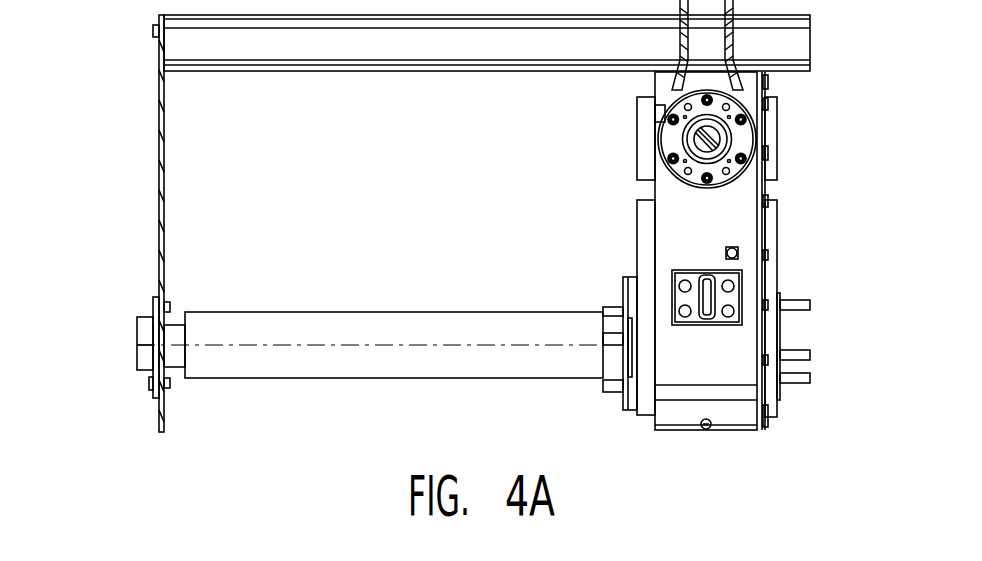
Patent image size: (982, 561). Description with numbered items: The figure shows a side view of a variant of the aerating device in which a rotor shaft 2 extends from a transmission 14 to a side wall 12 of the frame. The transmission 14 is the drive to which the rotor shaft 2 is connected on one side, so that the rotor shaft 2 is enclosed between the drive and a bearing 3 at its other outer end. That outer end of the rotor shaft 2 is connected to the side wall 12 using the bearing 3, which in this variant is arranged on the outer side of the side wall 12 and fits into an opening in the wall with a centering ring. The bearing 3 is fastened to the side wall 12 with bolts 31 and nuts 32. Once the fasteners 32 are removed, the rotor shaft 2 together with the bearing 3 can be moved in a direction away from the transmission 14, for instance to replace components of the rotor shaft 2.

The rotor shaft 2 is at (445, 235).
The bearing 3 is at (147, 360).
The side wall 12 is at (163, 135).
The transmission 14 is at (723, 213).
The bolts 31 is at (150, 305).
The nuts 32 is at (167, 308).